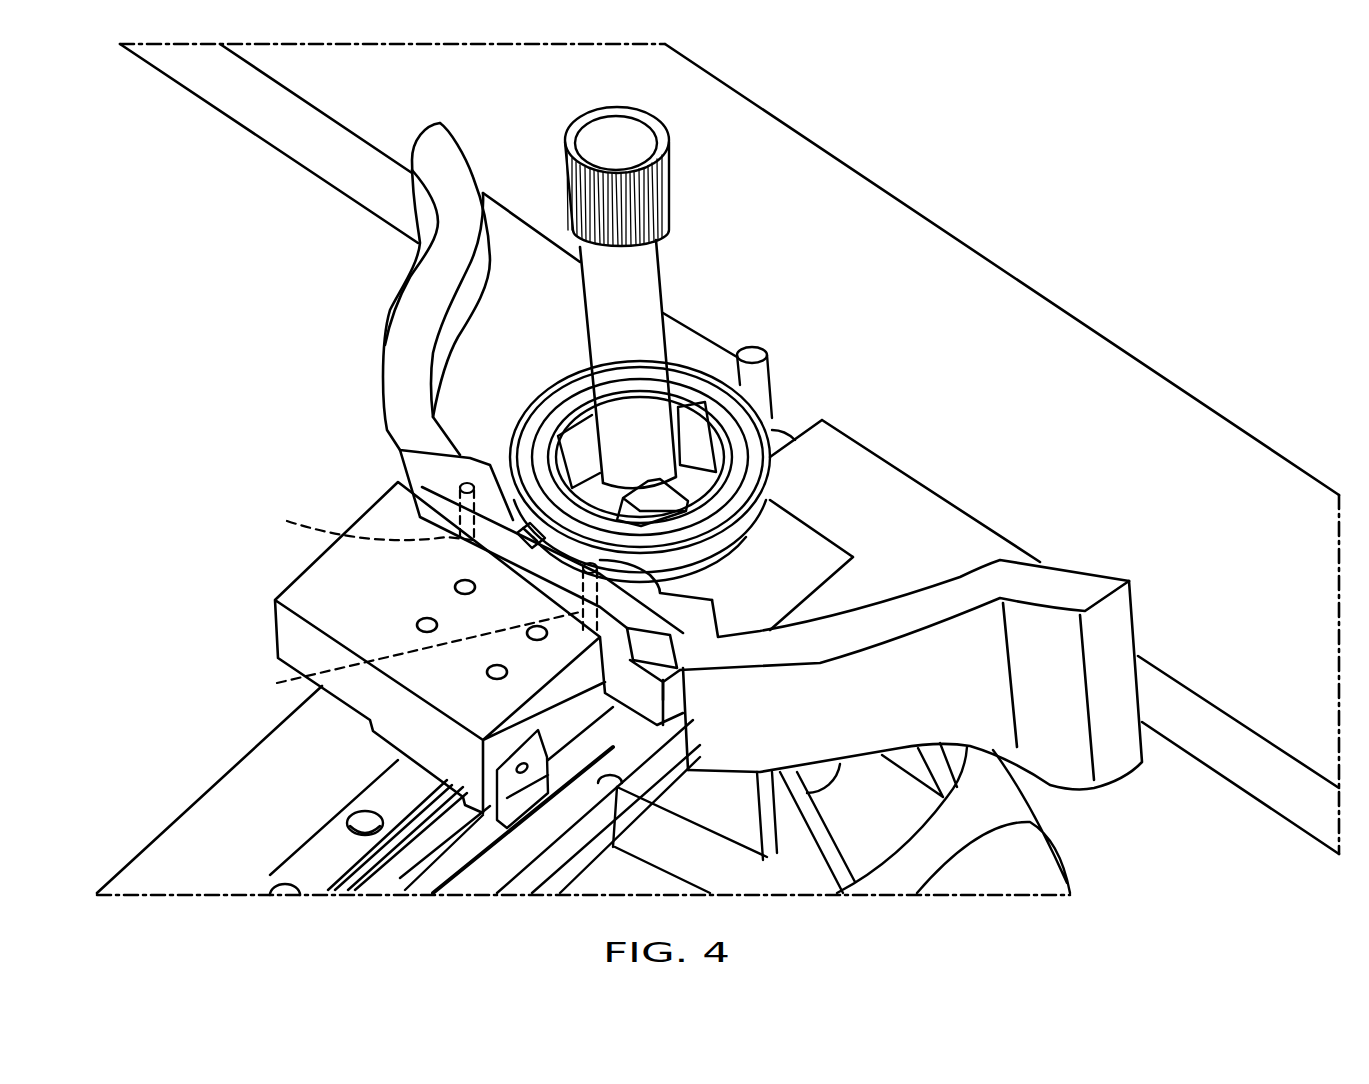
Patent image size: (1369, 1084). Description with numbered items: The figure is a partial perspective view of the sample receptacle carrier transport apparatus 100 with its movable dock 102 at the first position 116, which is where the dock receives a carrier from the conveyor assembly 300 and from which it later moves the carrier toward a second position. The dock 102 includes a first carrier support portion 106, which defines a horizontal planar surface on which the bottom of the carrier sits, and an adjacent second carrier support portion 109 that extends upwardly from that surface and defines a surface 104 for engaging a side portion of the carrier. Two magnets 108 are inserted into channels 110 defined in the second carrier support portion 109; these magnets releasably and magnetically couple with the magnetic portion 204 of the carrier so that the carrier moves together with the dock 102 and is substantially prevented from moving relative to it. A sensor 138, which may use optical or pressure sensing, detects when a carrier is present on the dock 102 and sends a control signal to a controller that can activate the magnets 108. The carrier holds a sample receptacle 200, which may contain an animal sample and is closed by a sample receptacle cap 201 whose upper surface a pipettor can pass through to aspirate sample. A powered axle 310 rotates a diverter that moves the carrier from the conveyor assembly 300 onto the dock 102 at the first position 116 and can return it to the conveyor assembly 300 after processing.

The sample receptacle carrier transport apparatus 100 is at (125, 657).
The movable dock 102 is at (700, 655).
The surface 104 is at (420, 467).
The first carrier support portion 106 is at (797, 570).
The magnets 108 is at (460, 488).
The second carrier support portion 109 is at (400, 452).
The channels 110 is at (459, 647).
The first position 116 is at (538, 518).
The sensor 138 is at (525, 535).
The sample receptacle 200 is at (606, 316).
The sample receptacle cap 201 is at (663, 190).
The magnetic portion 204 is at (752, 520).
The conveyor assembly 300 is at (975, 272).
The powered axle 310 is at (752, 353).